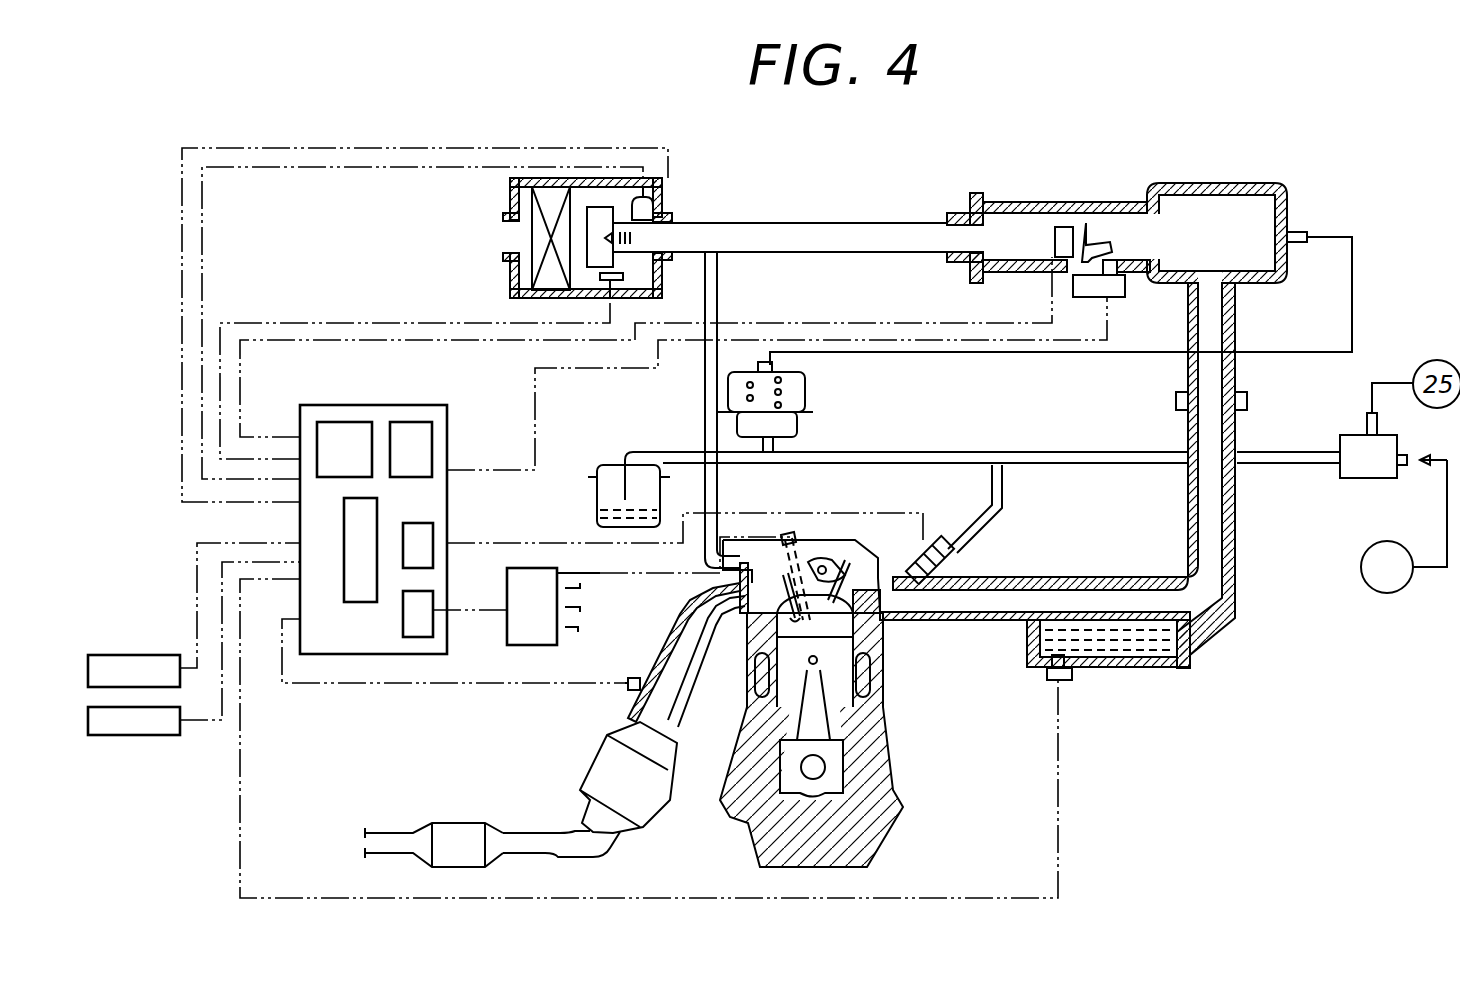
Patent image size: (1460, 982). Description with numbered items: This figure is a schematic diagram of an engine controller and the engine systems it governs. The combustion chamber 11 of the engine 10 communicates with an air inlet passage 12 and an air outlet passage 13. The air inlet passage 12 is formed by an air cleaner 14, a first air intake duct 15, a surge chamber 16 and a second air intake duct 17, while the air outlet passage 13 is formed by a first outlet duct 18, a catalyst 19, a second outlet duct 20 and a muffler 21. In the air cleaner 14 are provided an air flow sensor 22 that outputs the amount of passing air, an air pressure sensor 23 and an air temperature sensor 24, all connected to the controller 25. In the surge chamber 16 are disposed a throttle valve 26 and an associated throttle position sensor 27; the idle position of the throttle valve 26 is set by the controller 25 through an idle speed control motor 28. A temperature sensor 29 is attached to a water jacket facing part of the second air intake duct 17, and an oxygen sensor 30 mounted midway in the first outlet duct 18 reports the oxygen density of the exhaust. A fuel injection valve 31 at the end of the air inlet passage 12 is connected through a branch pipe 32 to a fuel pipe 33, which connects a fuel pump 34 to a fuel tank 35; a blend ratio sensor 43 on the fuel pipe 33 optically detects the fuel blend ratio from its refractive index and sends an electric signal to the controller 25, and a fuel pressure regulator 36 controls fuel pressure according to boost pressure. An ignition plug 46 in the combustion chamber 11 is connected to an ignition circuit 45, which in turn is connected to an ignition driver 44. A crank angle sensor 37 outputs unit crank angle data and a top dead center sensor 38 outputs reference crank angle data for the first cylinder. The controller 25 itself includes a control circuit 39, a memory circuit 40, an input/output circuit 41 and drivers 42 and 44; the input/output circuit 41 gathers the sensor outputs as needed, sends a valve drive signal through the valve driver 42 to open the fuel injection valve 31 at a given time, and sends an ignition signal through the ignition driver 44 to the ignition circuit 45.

The engine 10 is at (912, 728).
The combustion chamber 11 is at (890, 633).
The air inlet passage 12 is at (1012, 590).
The air outlet passage 13 is at (682, 622).
The air cleaner 14 is at (503, 200).
The first air intake duct 15 is at (866, 222).
The surge chamber 16 is at (1212, 183).
The second air intake duct 17 is at (1098, 576).
The first outlet duct 18 is at (707, 593).
The catalyst 19 is at (593, 757).
The second outlet duct 20 is at (553, 830).
The muffler 21 is at (458, 830).
The air flow sensor 22 is at (636, 200).
The air pressure sensor 23 is at (668, 205).
The air temperature sensor 24 is at (625, 280).
The engine control unit 25 is at (447, 418).
The throttle valve 26 is at (1092, 237).
The throttle position sensor 27 is at (1068, 250).
The idle speed control motor 28 is at (1118, 298).
The temperature sensor 29 is at (1075, 670).
The oxygen sensor 30 is at (635, 678).
The fuel injection valve 31 is at (947, 544).
The fuel pipe 32 is at (993, 500).
The fuel pipe 33 is at (1098, 451).
The fuel pump 34 is at (1362, 555).
The fuel tank 35 is at (618, 466).
The fuel pressure regulator 36 is at (812, 437).
The crank angle sensor 37 is at (130, 655).
The top dead center sensor 38 is at (132, 735).
The control circuit 39 is at (340, 424).
The memory circuit 40 is at (407, 424).
The input/output circuit 41 is at (365, 600).
The valve driver 42 is at (433, 558).
The blend ratio sensor 43 is at (1345, 436).
The ignition driver 44 is at (433, 630).
The ignition circuit 45 is at (548, 640).
The ignition plug 46 is at (800, 535).